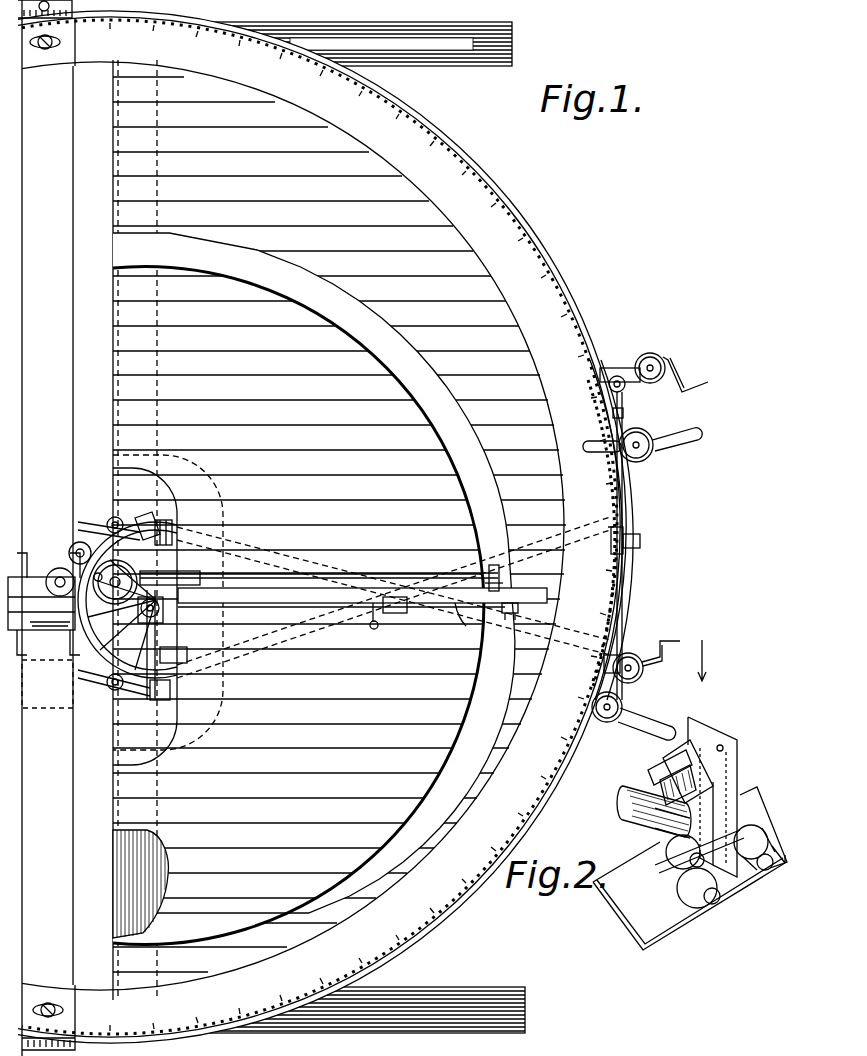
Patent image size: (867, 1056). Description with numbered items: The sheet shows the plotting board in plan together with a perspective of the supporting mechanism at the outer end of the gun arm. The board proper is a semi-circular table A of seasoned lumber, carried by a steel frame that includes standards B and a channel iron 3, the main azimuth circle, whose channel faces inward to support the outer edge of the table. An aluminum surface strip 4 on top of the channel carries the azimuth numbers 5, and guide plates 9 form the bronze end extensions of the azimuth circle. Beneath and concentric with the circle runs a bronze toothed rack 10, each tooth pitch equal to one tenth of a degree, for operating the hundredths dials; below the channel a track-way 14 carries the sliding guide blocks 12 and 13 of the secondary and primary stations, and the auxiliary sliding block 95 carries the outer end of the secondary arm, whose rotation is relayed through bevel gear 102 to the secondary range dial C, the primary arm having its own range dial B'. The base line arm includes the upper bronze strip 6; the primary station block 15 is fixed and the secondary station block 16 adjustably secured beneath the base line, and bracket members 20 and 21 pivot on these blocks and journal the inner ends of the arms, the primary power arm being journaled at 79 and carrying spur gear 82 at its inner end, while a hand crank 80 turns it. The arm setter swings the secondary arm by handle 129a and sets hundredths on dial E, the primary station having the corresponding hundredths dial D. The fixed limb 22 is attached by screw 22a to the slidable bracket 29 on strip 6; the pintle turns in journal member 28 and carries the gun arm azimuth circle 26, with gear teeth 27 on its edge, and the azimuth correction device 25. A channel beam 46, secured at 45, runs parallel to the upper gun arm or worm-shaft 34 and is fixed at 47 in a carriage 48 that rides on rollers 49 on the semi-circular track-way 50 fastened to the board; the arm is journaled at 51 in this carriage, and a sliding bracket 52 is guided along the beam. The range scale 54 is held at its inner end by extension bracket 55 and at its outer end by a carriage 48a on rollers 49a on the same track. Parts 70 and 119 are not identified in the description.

In FIG. 1, the semi-circular table A is at (339, 530).
In FIG. 1, the bronze strip 6 is at (47, 528).
In FIG. 1, the guide plates 9 is at (50, 1002).
In FIG. 1, the standards B is at (365, 527).
In FIG. 1, the aluminum surface strip 4 is at (558, 300).
In FIG. 1, the azimuth numbers 5 is at (547, 384).
In FIG. 1, the toothed rack 10 is at (504, 222).
In FIG. 1, the semi-circular track-way 50 is at (314, 589).
In FIG. 2, the semi-circular track-way 50 is at (689, 896).
In FIG. 1, the channel iron 3 is at (140, 884).
In FIG. 1, the fixed limb 22 is at (106, 648).
In FIG. 1, the securing point of channel beam 45 is at (132, 574).
In FIG. 1, the gear teeth 27 is at (58, 572).
In FIG. 1, the journal member 28 is at (76, 548).
In FIG. 1, the slidable bracket 29 is at (44, 630).
In FIG. 1, the screw 22a is at (50, 615).
In FIG. 1, the primary station block 15 is at (95, 522).
In FIG. 1, the bracket member 20 is at (120, 519).
In FIG. 1, the journal of primary power arm 79 is at (153, 518).
In FIG. 1, the spur gear 82 is at (172, 528).
In FIG. 1, the secondary station block 16 is at (100, 690).
In FIG. 1, the bracket member 21 is at (118, 690).
In FIG. 1, the azimuth correction device 25 is at (162, 620).
In FIG. 1, the gun arm azimuth circle 26 is at (172, 652).
In FIG. 1, the extension bracket 55 is at (200, 584).
In FIG. 1, the channel beam 46 is at (388, 573).
In FIG. 2, the channel beam 46 is at (657, 764).
In FIG. 1, the scale bar 70 is at (320, 588).
In FIG. 2, the scale bar 70 is at (701, 742).
In FIG. 1, the carriage member 48 is at (494, 566).
In FIG. 2, the carriage member 48 is at (664, 866).
In FIG. 1, the carriage 48a is at (512, 613).
In FIG. 2, the carriage 48a is at (738, 858).
In FIG. 1, the slidably mounted bracket 52 is at (396, 618).
In FIG. 1, the range scale 54 is at (466, 626).
In FIG. 2, the range scale 54 is at (688, 771).
In FIG. 1, the track-way 14 is at (612, 592).
In FIG. 1, the auxiliary sliding block 95 is at (641, 543).
In FIG. 1, the bevel gear 102 is at (624, 366).
In FIG. 1, the secondary arm range dial C is at (652, 354).
In FIG. 1, the lever 119 is at (690, 374).
In FIG. 1, the guide block 12 is at (624, 403).
In FIG. 1, the hundredths dial E is at (641, 456).
In FIG. 1, the handle 129a is at (692, 437).
In FIG. 1, the primary station arm range dial B' is at (637, 676).
In FIG. 1, the hand crank 80 is at (674, 655).
In FIG. 1, the guide block 13 is at (622, 705).
In FIG. 1, the hundredths dial D is at (607, 722).
In FIG. 2, the securing point of beam in carriage 47 is at (670, 785).
In FIG. 2, the upper gun arm 34 is at (627, 797).
In FIG. 2, the journal of upper gun arm 51 is at (660, 818).
In FIG. 2, the rollers 49 is at (757, 826).
In FIG. 2, the rollers 49a is at (760, 846).